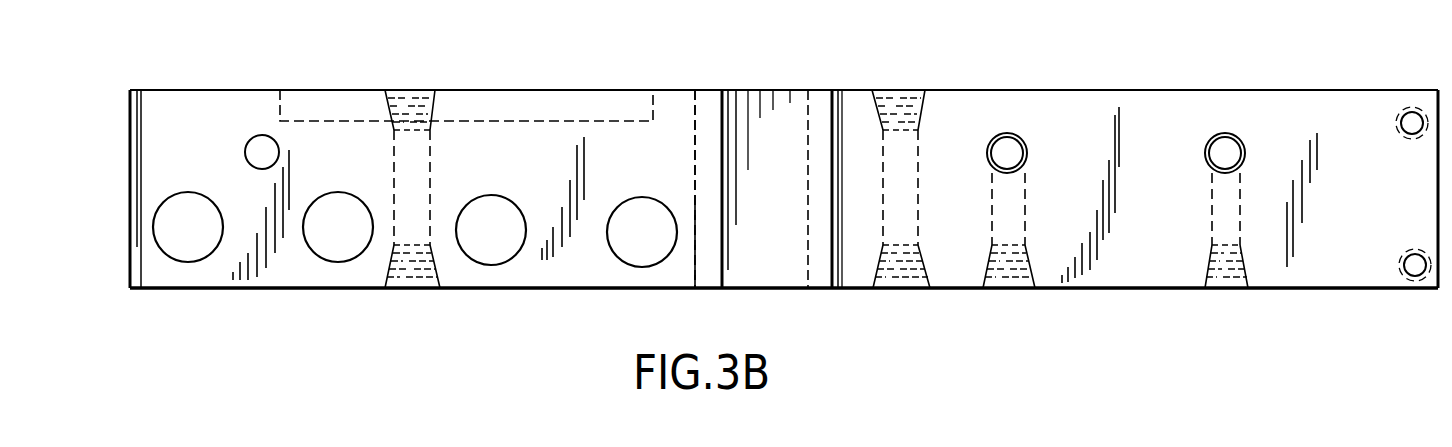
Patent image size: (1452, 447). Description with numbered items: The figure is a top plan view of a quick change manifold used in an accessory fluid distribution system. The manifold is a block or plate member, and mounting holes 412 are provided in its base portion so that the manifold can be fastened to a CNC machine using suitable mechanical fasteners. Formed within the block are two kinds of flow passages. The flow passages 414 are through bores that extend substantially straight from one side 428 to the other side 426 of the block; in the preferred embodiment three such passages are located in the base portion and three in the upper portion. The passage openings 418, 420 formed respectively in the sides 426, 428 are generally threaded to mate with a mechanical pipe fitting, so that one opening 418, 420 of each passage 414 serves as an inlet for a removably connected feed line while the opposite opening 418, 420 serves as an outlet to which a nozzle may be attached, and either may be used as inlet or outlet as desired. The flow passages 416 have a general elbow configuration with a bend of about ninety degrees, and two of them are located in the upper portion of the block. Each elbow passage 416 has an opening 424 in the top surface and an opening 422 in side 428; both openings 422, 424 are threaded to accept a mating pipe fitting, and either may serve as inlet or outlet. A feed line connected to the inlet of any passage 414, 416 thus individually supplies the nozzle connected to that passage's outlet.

The mounting holes 412 is at (188, 262).
The flow passages 414 is at (415, 160).
The flow passages 416 is at (1027, 210).
The passage opening 418 is at (408, 290).
The passage opening 420 is at (397, 92).
The opening 422 is at (1018, 292).
The opening 424 is at (1012, 145).
The side 426 is at (678, 91).
The side 428 is at (673, 292).